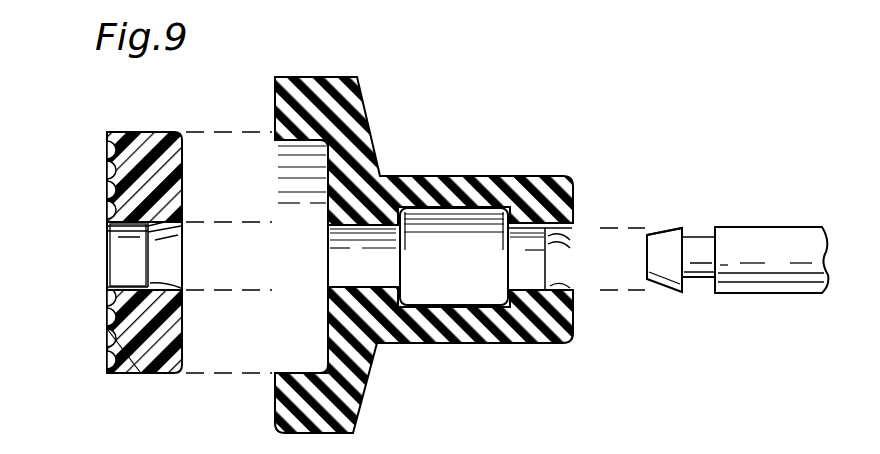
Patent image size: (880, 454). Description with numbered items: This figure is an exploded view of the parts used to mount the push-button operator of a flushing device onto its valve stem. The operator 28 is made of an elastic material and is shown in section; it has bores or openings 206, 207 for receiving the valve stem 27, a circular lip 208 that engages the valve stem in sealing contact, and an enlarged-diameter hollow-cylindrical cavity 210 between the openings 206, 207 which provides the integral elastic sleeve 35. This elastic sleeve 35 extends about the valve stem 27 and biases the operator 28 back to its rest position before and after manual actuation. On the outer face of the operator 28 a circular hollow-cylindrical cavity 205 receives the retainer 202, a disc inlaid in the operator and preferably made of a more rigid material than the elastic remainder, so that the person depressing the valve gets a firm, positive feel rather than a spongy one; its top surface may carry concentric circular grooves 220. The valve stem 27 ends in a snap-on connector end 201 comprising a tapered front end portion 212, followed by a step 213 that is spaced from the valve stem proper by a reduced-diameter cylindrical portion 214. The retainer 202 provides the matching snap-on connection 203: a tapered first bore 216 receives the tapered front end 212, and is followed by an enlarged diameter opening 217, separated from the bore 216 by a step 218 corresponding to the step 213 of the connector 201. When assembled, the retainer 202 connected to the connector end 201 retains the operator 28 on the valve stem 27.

The valve stem 27 is at (768, 227).
The operator 28 is at (423, 173).
The elastic sleeve 35 is at (417, 345).
The snap-on connector end 201 is at (669, 297).
The retainer 202 is at (172, 108).
The snap-on connection 203 is at (126, 255).
The cavity 205 is at (298, 374).
The opening 206 is at (334, 230).
The opening 207 is at (527, 286).
The circular lip 208 is at (568, 238).
The enlarged-diameter hollow-cylindrical cavity 210 is at (462, 213).
The tapered front end portion 212 is at (668, 232).
The step 213 is at (686, 232).
The reduced-diameter cylindrical portion 214 is at (698, 283).
The tapered first bore 216 is at (170, 280).
The enlarged diameter opening 217 is at (106, 228).
The step 218 is at (110, 275).
The concentric circular grooves 220 is at (105, 333).